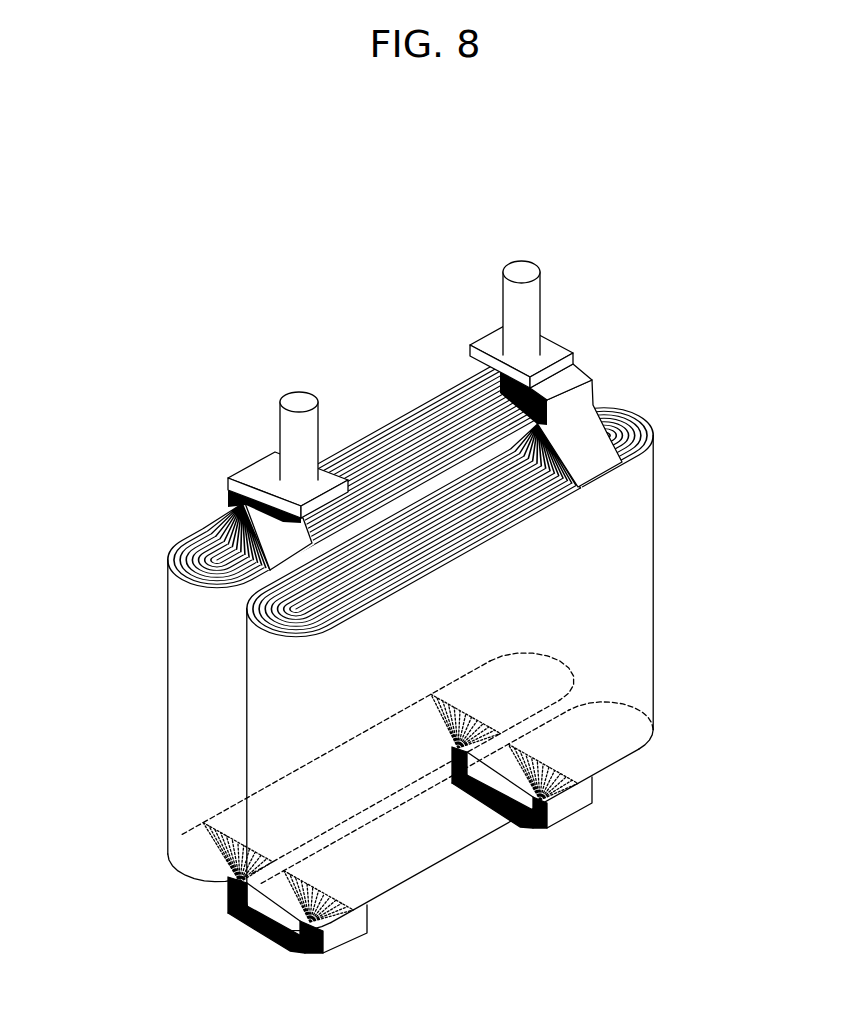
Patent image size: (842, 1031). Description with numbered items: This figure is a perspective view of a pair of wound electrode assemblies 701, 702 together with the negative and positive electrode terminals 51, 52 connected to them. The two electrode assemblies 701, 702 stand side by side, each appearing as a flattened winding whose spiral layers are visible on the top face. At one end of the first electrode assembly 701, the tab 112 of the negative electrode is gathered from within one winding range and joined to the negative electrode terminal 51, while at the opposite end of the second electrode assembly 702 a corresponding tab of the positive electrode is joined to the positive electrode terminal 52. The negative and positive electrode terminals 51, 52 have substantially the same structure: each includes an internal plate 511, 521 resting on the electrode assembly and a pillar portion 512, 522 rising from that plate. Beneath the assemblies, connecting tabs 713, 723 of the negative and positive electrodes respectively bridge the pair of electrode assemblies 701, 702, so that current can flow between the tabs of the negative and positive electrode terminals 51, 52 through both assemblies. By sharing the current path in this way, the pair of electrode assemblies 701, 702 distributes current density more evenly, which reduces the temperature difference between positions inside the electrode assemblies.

The negative electrode terminal 51 is at (292, 444).
The internal plate 511 is at (269, 468).
The pillar portion 512 is at (303, 403).
The positive electrode terminal 52 is at (536, 339).
The internal plate 521 is at (555, 340).
The pillar portion 522 is at (520, 271).
The tab 112 is at (242, 478).
The electrode assembly 701 is at (330, 612).
The electrode assembly 702 is at (662, 556).
The connecting tab 713 is at (307, 947).
The connecting tab 723 is at (533, 820).